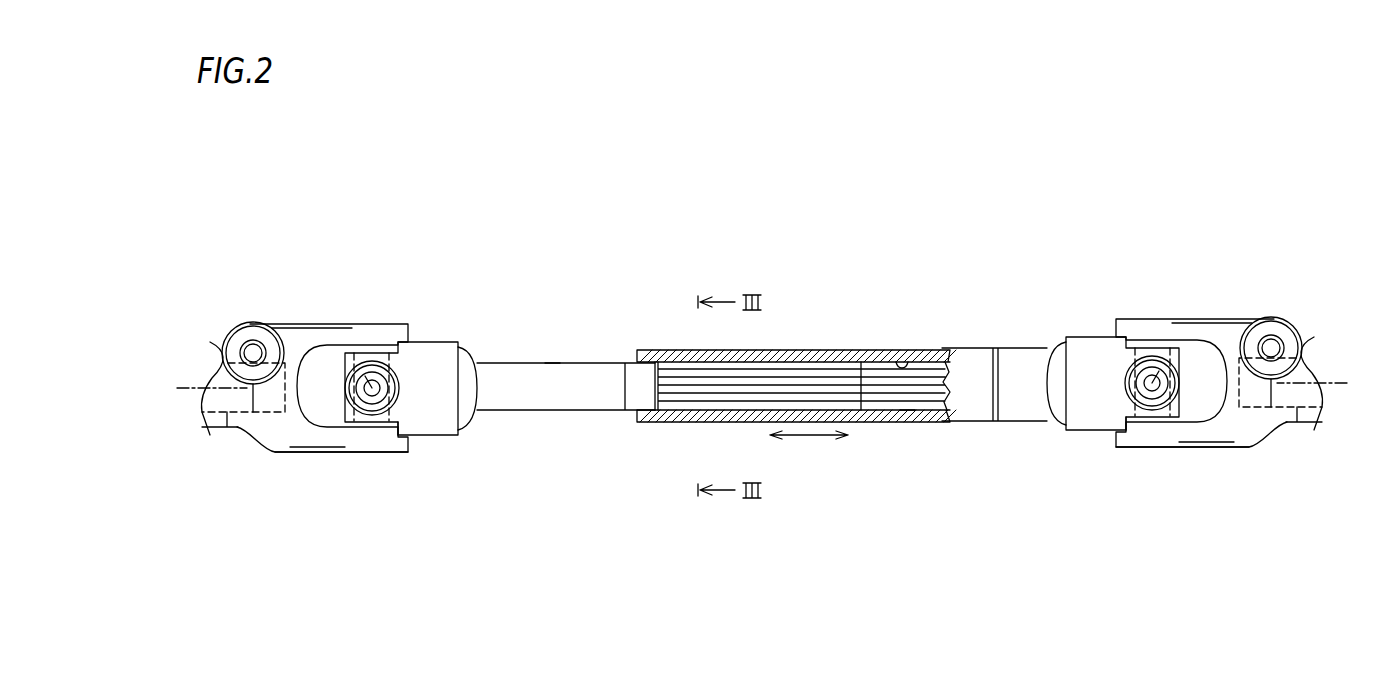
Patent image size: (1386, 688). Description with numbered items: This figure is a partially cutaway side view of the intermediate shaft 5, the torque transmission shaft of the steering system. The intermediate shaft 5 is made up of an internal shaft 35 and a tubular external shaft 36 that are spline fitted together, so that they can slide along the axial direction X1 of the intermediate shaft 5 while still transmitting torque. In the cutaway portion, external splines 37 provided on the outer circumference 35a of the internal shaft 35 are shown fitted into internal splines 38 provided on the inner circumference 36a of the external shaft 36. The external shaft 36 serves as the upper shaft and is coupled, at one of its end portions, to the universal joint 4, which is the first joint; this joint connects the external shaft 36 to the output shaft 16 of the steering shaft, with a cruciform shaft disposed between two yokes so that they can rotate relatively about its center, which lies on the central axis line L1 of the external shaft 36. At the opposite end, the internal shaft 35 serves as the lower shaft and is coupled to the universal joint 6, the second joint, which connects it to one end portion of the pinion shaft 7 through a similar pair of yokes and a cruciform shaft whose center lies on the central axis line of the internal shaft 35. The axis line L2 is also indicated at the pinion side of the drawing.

The universal joint 4 is at (1193, 335).
The intermediate shaft 5 is at (976, 335).
The universal joint 6 is at (298, 336).
The pinion shaft 7 is at (226, 440).
The output shaft 16 is at (1300, 428).
The internal shaft 35 is at (584, 350).
The outer circumference 35a is at (550, 395).
The external shaft 36 is at (816, 335).
The inner circumference 36a is at (902, 366).
The external splines 37 is at (732, 400).
The internal splines 38 is at (905, 405).
The central axis line L1 is at (1333, 380).
The axis L2 is at (190, 382).
The axial direction X1 is at (809, 463).